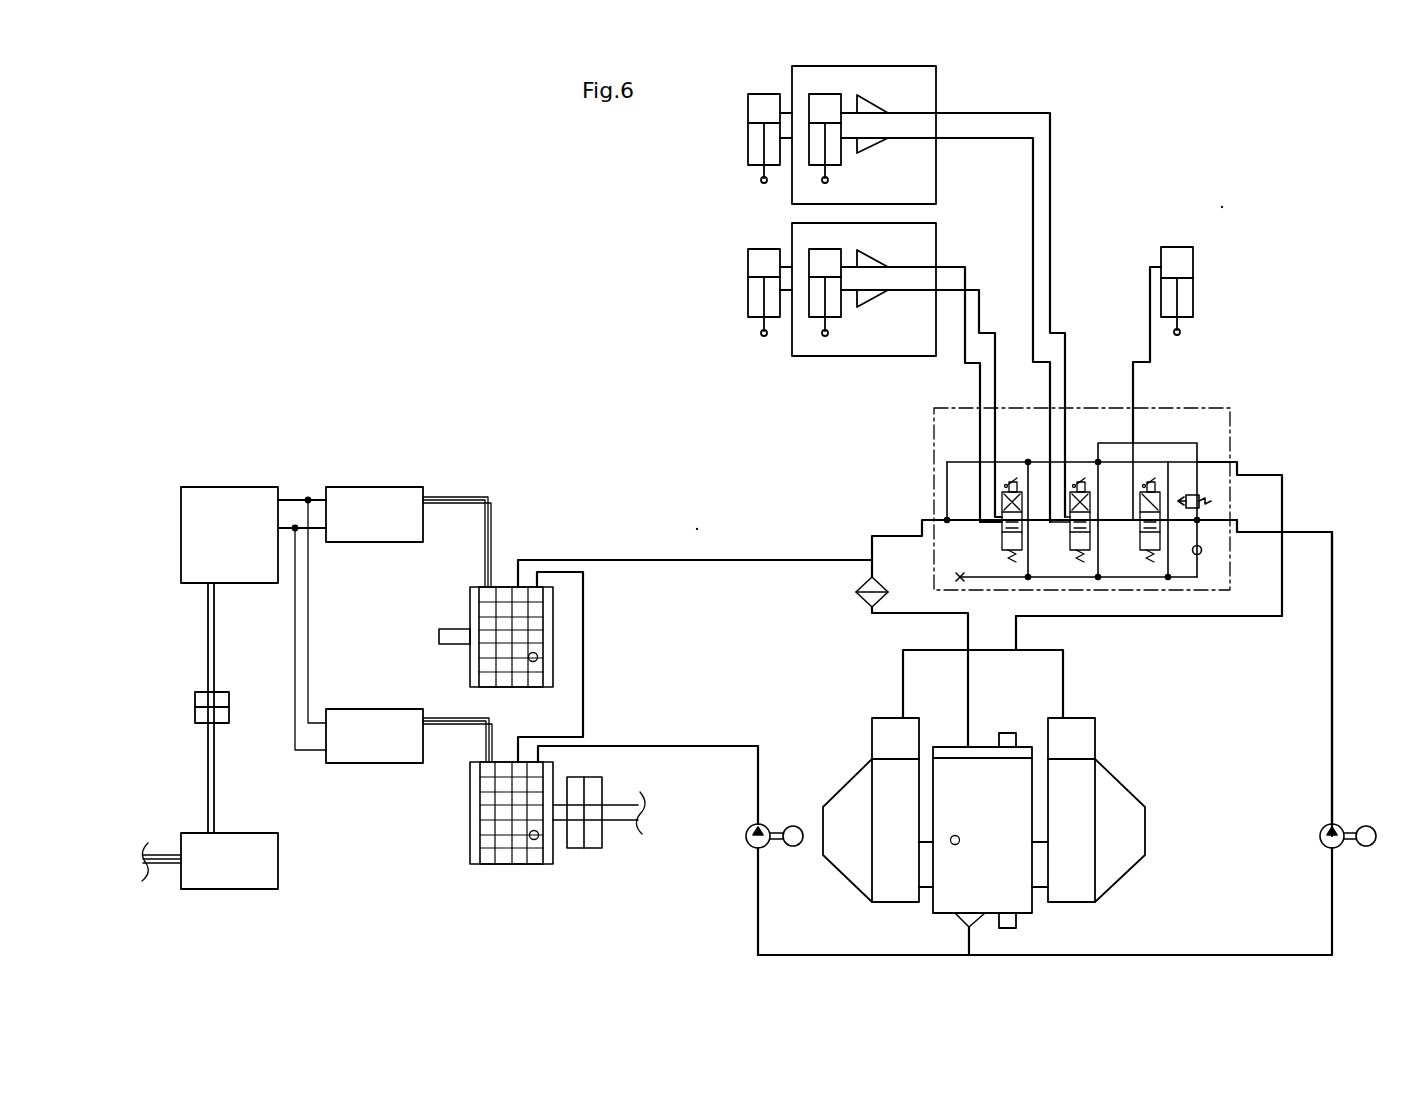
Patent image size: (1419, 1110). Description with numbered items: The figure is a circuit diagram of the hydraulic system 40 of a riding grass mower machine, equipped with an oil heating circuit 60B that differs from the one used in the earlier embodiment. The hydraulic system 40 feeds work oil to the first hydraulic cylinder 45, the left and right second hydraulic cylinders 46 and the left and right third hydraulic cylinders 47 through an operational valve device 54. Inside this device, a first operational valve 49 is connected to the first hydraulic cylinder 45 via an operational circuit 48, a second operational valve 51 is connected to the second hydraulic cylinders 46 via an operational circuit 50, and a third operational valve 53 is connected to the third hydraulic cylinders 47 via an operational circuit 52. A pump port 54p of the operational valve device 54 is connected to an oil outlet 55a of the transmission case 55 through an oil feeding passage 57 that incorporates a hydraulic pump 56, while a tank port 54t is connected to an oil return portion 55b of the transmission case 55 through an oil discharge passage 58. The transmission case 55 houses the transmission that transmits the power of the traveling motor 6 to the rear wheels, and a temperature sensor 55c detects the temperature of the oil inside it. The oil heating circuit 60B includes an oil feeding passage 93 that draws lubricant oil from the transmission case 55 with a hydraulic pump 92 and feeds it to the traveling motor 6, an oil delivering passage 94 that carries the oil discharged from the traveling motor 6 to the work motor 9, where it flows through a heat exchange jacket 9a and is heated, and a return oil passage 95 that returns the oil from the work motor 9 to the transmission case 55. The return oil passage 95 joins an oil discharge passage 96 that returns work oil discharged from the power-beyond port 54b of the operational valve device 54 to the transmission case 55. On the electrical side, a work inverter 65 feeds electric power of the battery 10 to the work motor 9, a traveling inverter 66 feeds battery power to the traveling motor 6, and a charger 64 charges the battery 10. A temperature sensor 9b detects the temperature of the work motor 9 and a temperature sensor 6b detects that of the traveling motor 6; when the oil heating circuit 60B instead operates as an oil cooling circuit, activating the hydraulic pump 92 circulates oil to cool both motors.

The traveling motor 6 is at (470, 828).
The temperature sensor 6b is at (480, 858).
The work motor 9 is at (470, 604).
The heat exchange jacket 9a is at (502, 586).
The temperature sensor 9b is at (528, 656).
The battery 10 is at (220, 488).
The hydraulic system 40 is at (1224, 208).
The first hydraulic cylinder 45 is at (1193, 304).
The second hydraulic cylinders 46 is at (744, 299).
The third hydraulic cylinders 47 is at (744, 153).
The operational circuit 48 is at (1148, 301).
The first operational valve 49 is at (1142, 542).
The operational circuit 50 is at (966, 346).
The second operational valve 51 is at (1004, 542).
The operational circuit 52 is at (1056, 192).
The third operational valve 53 is at (1072, 542).
The operational valve device 54 is at (1178, 406).
The power-beyond port 54b is at (922, 530).
The pump port 54p is at (1238, 542).
The tank port 54t is at (1238, 462).
The transmission case 55 is at (1022, 901).
The oil outlet 55a is at (958, 922).
The oil return portion 55b is at (900, 705).
The temperature sensor 55c is at (960, 838).
The hydraulic pump 56 is at (1318, 838).
The oil feeding passage 57 is at (1334, 690).
The oil discharge passage 58 is at (1160, 616).
The oil heating circuit 60B is at (696, 528).
The charger 64 is at (278, 857).
The work inverter 65 is at (374, 488).
The traveling inverter 66 is at (340, 768).
The hydraulic pump 92 is at (744, 838).
The oil feeding passage 93 is at (686, 746).
The oil delivering passage 94 is at (584, 658).
The return oil passage 95 is at (752, 560).
The oil discharge passage 96 is at (900, 616).